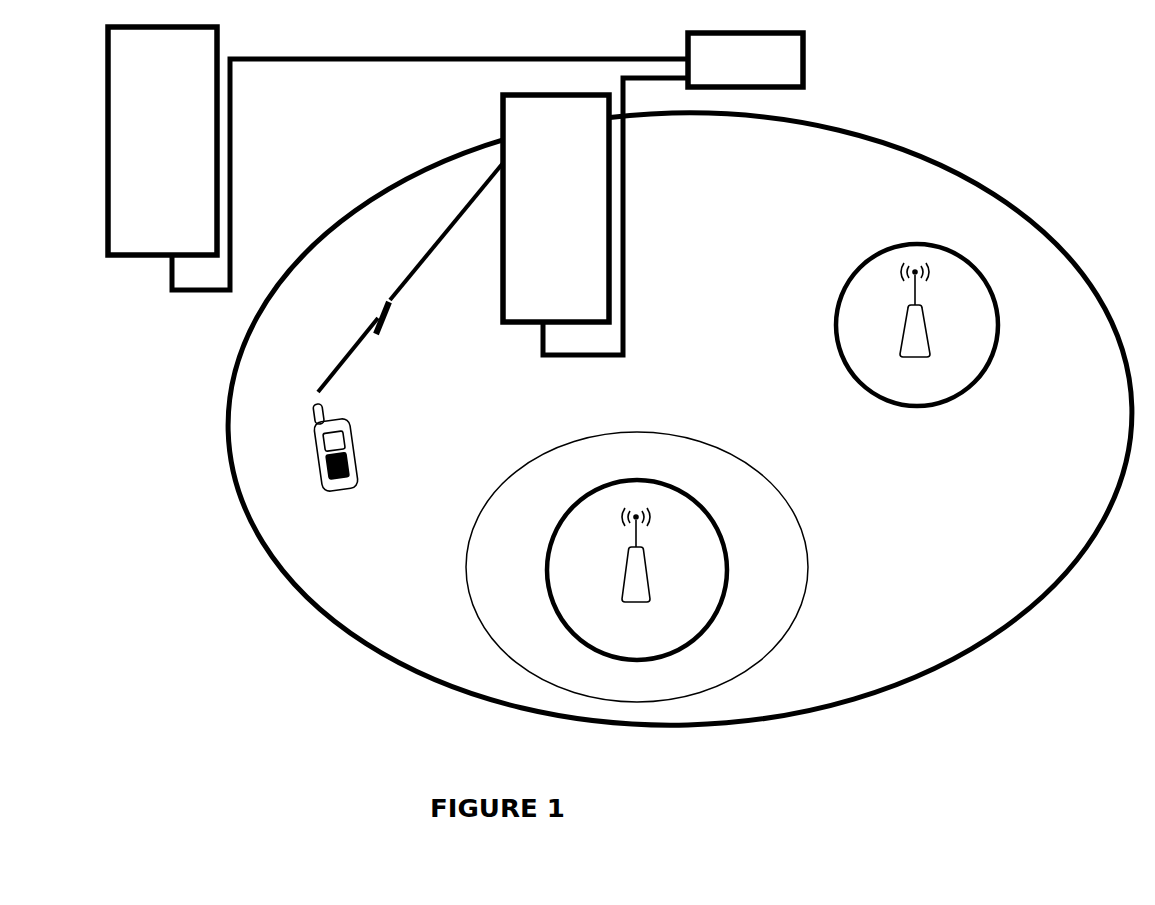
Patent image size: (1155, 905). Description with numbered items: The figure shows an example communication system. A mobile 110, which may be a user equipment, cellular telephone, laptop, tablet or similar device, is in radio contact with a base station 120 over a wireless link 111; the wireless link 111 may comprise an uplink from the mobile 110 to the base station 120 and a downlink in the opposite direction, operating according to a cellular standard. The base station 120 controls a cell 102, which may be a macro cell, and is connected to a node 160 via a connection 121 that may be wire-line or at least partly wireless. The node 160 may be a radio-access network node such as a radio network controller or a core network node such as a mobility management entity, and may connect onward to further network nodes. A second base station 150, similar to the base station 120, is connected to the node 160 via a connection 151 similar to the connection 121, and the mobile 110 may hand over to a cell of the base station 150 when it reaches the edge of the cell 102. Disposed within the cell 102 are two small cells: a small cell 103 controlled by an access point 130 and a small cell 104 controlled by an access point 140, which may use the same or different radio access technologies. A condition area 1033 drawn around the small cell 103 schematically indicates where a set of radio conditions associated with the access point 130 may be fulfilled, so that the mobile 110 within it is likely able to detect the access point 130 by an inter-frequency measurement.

The cell 102 is at (680, 419).
The condition area 1033 is at (637, 567).
The small cell 103 is at (637, 578).
The small cell 104 is at (917, 340).
The mobile 110 is at (335, 462).
The wireless link 111 is at (410, 277).
The base station 120 is at (538, 224).
The connection 121 is at (615, 216).
The access point 130 is at (634, 570).
The access point 140 is at (917, 325).
The base station 150 is at (158, 155).
The connection 151 is at (430, 174).
The node 160 is at (745, 60).